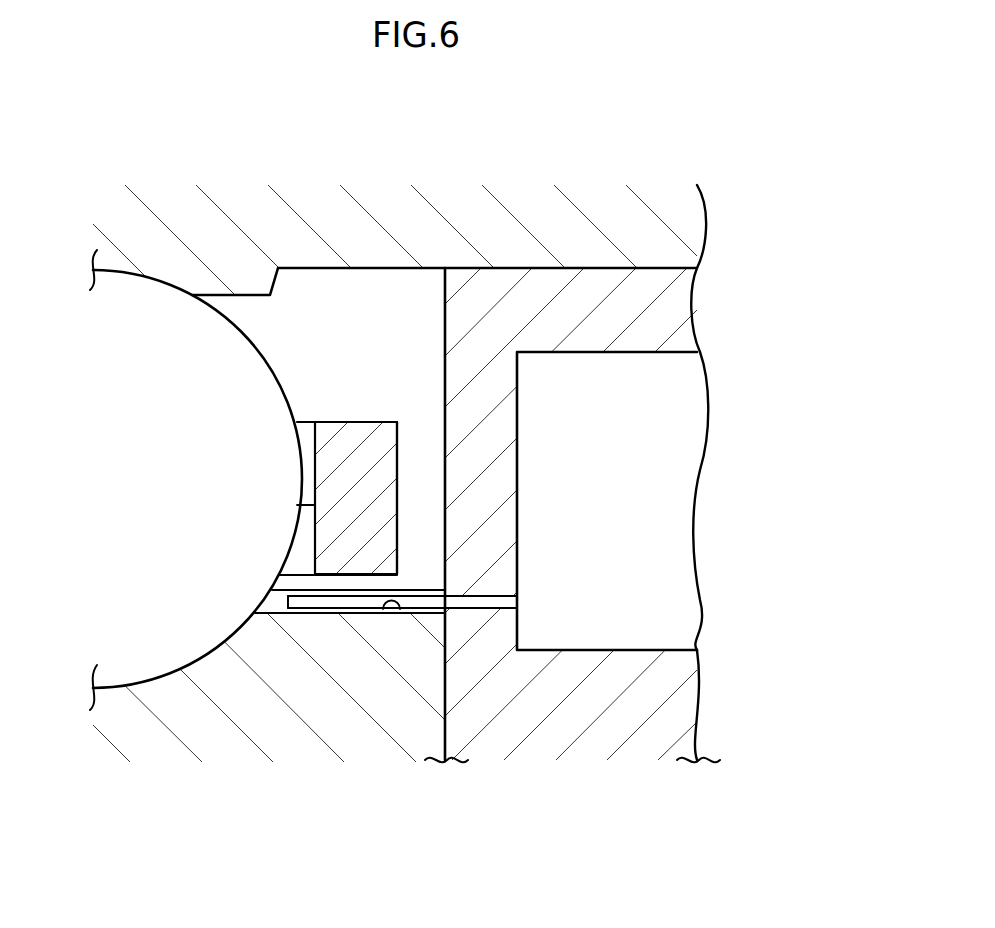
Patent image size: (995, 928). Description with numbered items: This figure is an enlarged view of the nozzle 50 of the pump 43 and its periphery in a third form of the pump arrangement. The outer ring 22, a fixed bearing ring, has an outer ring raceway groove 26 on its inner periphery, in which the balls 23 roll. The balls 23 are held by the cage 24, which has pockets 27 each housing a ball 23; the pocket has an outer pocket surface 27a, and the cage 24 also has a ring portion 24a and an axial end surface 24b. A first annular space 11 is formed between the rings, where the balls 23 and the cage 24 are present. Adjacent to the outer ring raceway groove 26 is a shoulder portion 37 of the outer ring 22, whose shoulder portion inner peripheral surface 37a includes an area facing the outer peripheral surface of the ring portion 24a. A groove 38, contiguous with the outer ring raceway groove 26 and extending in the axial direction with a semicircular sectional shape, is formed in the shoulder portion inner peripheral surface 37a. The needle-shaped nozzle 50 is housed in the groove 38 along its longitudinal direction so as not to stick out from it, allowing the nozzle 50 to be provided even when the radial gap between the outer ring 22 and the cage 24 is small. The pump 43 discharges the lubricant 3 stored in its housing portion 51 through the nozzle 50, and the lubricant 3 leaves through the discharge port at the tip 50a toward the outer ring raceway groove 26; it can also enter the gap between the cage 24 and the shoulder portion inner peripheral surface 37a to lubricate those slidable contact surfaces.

The lubricant 3 is at (627, 610).
The first annular space 11 is at (422, 512).
The outer ring 22 is at (224, 728).
The balls 23 is at (158, 355).
The cage 24 is at (349, 409).
The ring portion 24a is at (368, 438).
The axial end surface 24b is at (397, 537).
The outer ring raceway groove 26 is at (208, 650).
The pocket 27 is at (306, 409).
The outer pocket surface 27a is at (300, 505).
The shoulder portion 37 is at (315, 642).
The shoulder portion inner peripheral surface 37a is at (358, 598).
The groove 38 is at (397, 602).
The pump 43 is at (563, 665).
The nozzle 50 is at (345, 602).
The tip 50a is at (288, 603).
The housing portion 51 is at (602, 425).